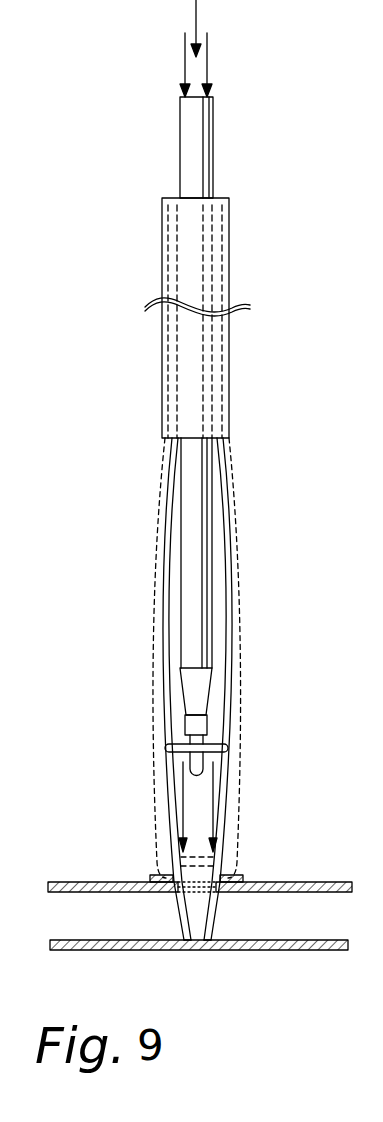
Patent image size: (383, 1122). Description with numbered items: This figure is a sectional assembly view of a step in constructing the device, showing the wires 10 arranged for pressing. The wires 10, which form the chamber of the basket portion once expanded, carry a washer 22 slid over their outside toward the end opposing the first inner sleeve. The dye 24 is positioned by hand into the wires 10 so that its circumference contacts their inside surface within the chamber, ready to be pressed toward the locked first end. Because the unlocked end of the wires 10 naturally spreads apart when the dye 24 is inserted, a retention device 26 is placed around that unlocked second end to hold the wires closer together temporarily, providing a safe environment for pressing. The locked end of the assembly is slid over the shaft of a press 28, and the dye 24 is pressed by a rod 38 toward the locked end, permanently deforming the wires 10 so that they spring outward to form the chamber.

The wires 10 is at (168, 560).
The washer 22 is at (240, 880).
The dye 24 is at (222, 745).
The retention device 26 is at (228, 400).
The press 28 is at (140, 880).
The rod 38 is at (203, 623).